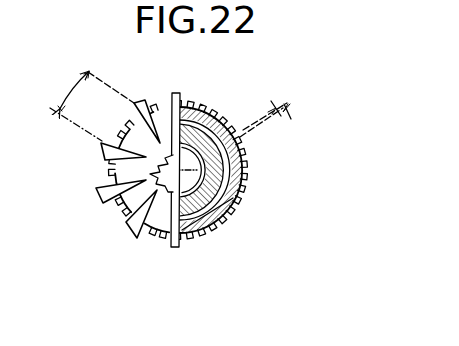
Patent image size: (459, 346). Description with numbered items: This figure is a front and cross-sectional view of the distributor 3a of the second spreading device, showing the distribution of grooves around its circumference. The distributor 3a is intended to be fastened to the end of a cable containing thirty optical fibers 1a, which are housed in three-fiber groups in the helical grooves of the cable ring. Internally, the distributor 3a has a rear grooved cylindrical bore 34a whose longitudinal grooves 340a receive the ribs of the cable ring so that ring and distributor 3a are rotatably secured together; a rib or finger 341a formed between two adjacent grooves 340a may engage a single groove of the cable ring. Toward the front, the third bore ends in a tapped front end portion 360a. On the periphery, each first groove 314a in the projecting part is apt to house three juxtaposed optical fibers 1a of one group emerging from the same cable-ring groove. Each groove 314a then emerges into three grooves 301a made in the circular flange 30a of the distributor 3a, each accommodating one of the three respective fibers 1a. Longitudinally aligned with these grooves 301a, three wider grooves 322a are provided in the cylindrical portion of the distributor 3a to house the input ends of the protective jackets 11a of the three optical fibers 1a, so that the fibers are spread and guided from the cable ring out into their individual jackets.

The optical fibers 1a is at (68, 82).
The first groove 314a is at (88, 70).
The grooved cylindrical bore 34a is at (183, 163).
The protective jackets 11a is at (291, 108).
The third groove 322a is at (248, 136).
The tapped front end portion 360a is at (236, 202).
The longitudinal grooves 340a is at (113, 172).
The circular flange 30a is at (112, 177).
The rib or finger 341a is at (133, 204).
The distributor 3a is at (70, 286).
The second groove 301a is at (172, 247).